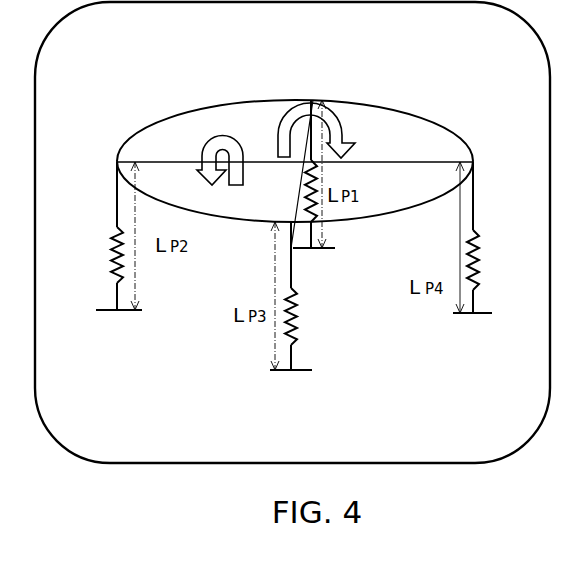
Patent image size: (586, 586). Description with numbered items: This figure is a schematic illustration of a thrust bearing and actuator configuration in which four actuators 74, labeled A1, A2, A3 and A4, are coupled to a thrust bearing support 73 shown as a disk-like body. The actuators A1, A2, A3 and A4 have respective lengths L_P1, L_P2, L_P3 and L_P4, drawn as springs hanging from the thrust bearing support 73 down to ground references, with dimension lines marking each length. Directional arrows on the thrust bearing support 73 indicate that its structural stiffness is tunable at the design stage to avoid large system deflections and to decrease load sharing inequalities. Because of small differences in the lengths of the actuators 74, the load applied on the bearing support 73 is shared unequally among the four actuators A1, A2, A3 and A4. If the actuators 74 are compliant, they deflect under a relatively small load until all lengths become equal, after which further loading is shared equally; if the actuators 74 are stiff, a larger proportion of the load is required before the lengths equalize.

The thrust bearing support 73 is at (404, 112).
The actuators 74 is at (99, 236).
The first actuator A1 is at (313, 154).
The second actuator A2 is at (111, 273).
The third actuator A3 is at (304, 296).
The fourth actuator A4 is at (491, 237).